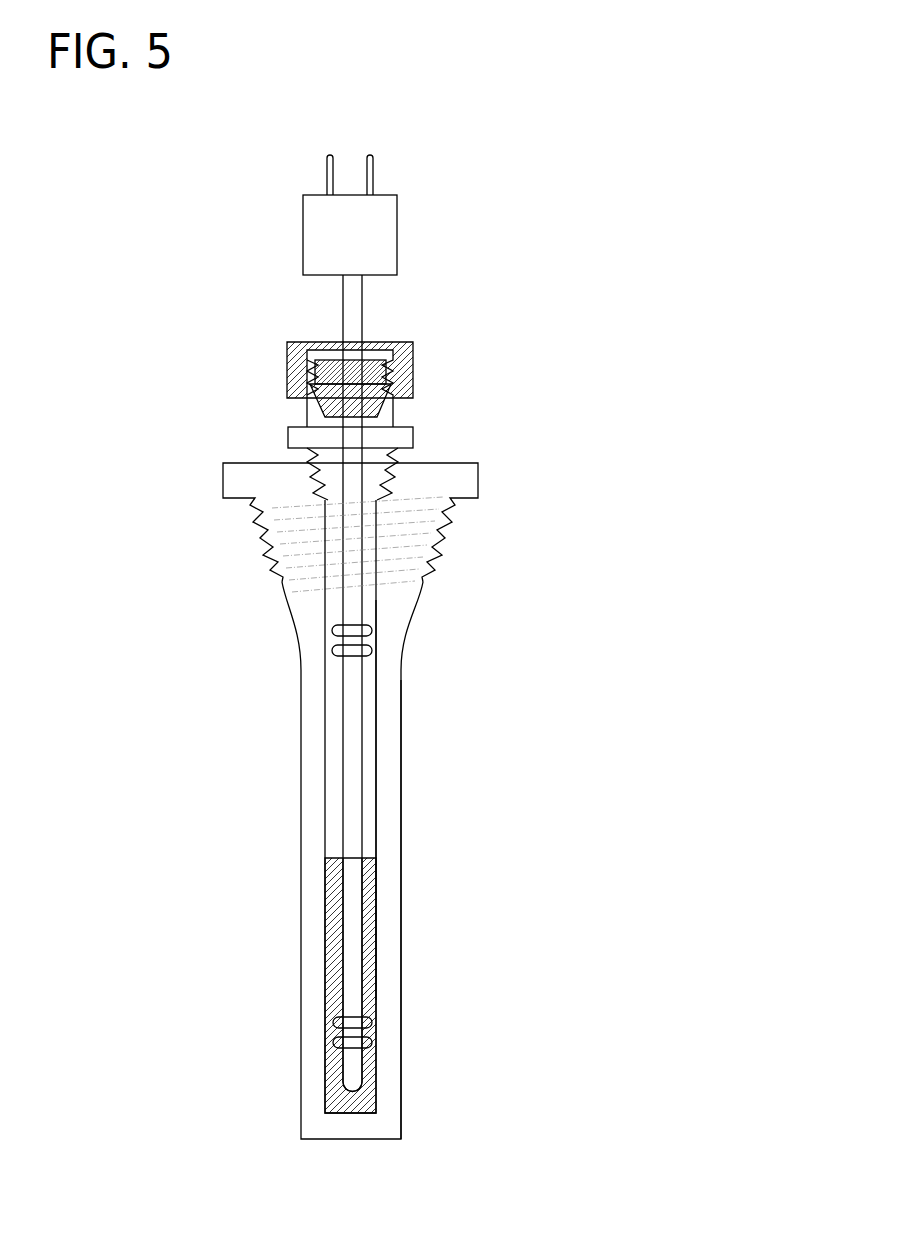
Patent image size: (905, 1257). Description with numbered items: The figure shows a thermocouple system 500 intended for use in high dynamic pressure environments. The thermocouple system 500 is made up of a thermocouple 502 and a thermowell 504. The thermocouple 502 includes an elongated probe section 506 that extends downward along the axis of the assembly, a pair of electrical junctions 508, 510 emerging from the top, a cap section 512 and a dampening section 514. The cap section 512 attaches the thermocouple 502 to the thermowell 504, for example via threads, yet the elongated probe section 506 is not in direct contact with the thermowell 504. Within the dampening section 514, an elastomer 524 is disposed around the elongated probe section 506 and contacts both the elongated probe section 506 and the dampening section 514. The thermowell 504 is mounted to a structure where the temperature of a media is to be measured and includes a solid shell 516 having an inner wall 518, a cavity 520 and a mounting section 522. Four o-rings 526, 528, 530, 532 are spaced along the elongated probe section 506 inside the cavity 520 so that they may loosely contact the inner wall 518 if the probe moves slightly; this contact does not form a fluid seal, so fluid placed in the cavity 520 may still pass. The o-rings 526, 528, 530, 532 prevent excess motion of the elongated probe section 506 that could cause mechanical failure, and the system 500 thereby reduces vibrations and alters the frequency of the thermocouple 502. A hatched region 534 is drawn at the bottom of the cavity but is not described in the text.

The thermocouple system 500 is at (124, 174).
The thermocouple 502 is at (380, 304).
The thermowell 504 is at (414, 762).
The elongated probe section 506 is at (342, 757).
The electrical junction 508 is at (325, 163).
The electrical junction 510 is at (373, 165).
The cap section 512 is at (413, 438).
The dampening section 514 is at (412, 368).
The solid shell 516 is at (308, 707).
The inner wall 518 is at (327, 793).
The cavity 520 is at (369, 692).
The mounting section 522 is at (480, 479).
The elastomer 524 is at (318, 362).
The o-ring 526 is at (372, 1040).
The o-ring 528 is at (370, 1017).
The o-ring 530 is at (335, 630).
The o-ring 532 is at (334, 650).
The potting fill 534 is at (367, 1103).